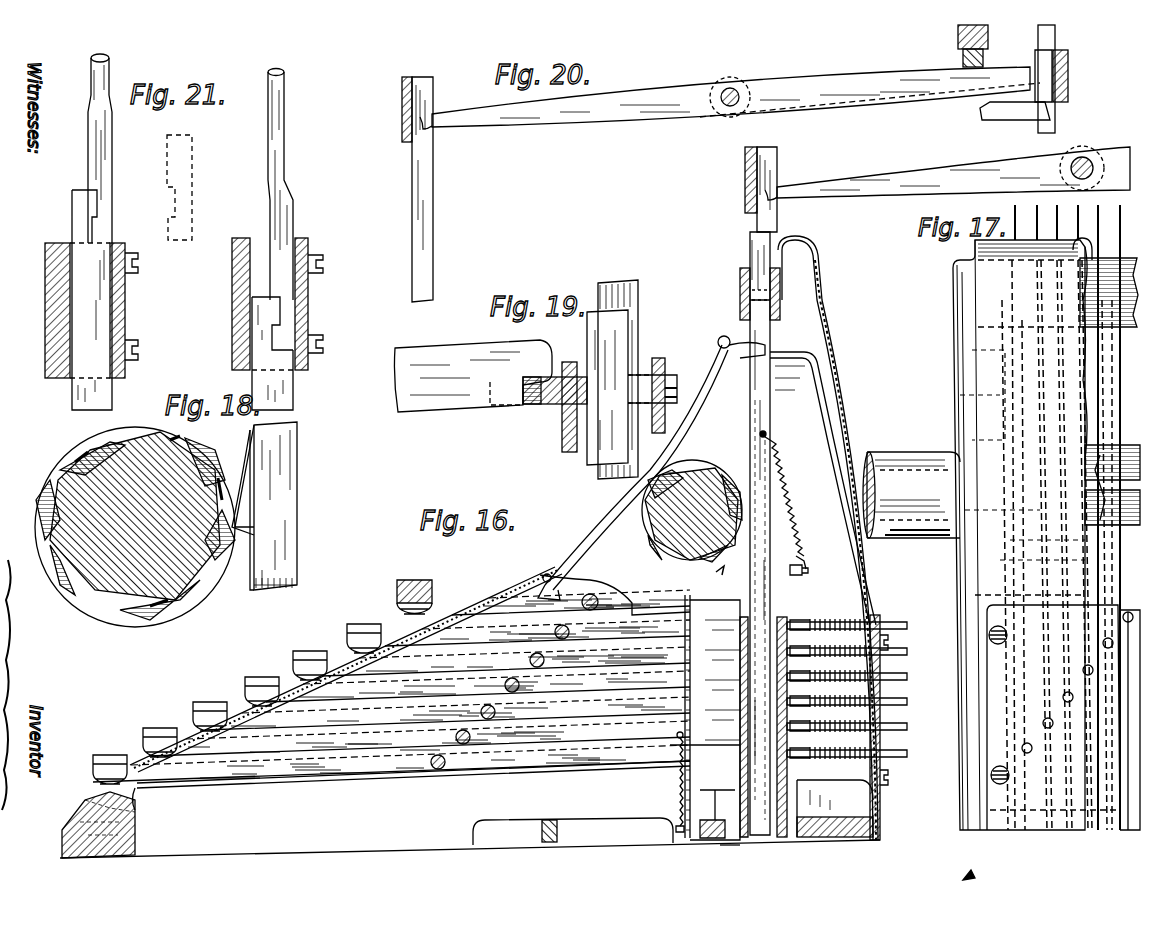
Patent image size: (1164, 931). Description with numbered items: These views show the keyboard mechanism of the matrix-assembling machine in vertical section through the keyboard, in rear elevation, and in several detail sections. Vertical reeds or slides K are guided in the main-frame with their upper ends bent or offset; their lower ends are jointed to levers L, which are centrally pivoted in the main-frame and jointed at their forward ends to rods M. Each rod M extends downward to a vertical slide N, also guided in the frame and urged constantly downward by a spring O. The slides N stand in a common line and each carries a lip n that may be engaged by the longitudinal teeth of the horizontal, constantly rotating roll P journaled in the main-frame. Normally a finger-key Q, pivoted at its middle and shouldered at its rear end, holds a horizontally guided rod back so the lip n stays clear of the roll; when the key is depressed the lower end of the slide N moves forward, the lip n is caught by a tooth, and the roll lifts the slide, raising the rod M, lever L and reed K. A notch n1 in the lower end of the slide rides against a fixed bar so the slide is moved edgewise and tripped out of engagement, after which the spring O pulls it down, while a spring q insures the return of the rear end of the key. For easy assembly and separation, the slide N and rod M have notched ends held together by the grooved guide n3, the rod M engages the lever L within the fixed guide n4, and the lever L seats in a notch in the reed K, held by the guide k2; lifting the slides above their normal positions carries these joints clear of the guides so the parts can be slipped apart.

In FIG. 21, the rod M is at (113, 140).
In FIG. 20, the rod M is at (436, 218).
In FIG. 21, the vertical slide N is at (181, 300).
In FIG. 19, the vertical slide N is at (634, 338).
In FIG. 18, the vertical slide N is at (300, 445).
In FIG. 16, the vertical slide N is at (772, 385).
In FIG. 17, the vertical slide N is at (1120, 748).
In FIG. 18, the lip n is at (240, 530).
In FIG. 16, the lip n is at (785, 470).
In FIG. 17, the lip n is at (1095, 225).
In FIG. 21, the grooved guide n3 is at (125, 300).
In FIG. 16, the grooved guide n3 is at (781, 300).
In FIG. 17, the grooved guide n3 is at (1118, 258).
In FIG. 20, the fixed guide n4 is at (403, 94).
In FIG. 16, the notch or depression n1 is at (790, 795).
In FIG. 20, the lever L is at (672, 113).
In FIG. 20, the vertical reed or slide K is at (1057, 38).
In FIG. 20, the guide k2 is at (1079, 76).
In FIG. 18, the roll P is at (150, 598).
In FIG. 16, the roll P is at (660, 560).
In FIG. 17, the roll P is at (1030, 445).
In FIG. 19, the finger-key Q is at (473, 376).
In FIG. 16, the finger-key Q is at (636, 628).
In FIG. 16, the spring q is at (676, 790).
In FIG. 19, the spring O is at (670, 375).
In FIG. 16, the spring O is at (890, 622).